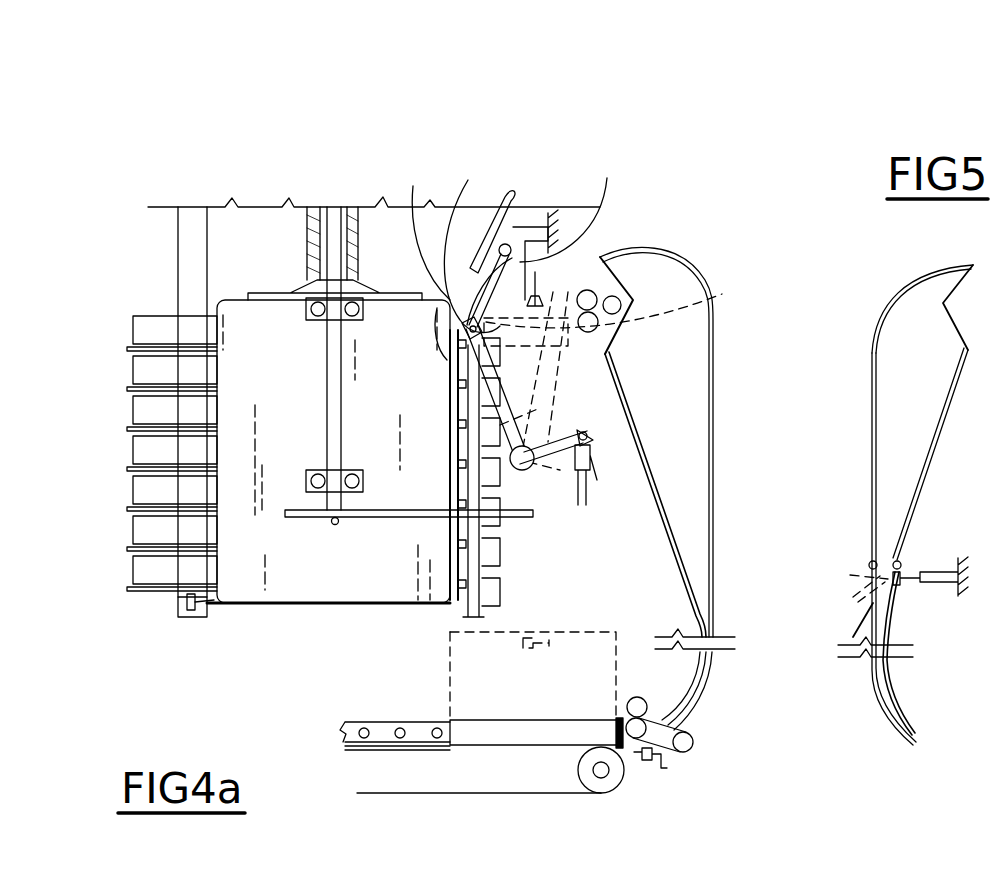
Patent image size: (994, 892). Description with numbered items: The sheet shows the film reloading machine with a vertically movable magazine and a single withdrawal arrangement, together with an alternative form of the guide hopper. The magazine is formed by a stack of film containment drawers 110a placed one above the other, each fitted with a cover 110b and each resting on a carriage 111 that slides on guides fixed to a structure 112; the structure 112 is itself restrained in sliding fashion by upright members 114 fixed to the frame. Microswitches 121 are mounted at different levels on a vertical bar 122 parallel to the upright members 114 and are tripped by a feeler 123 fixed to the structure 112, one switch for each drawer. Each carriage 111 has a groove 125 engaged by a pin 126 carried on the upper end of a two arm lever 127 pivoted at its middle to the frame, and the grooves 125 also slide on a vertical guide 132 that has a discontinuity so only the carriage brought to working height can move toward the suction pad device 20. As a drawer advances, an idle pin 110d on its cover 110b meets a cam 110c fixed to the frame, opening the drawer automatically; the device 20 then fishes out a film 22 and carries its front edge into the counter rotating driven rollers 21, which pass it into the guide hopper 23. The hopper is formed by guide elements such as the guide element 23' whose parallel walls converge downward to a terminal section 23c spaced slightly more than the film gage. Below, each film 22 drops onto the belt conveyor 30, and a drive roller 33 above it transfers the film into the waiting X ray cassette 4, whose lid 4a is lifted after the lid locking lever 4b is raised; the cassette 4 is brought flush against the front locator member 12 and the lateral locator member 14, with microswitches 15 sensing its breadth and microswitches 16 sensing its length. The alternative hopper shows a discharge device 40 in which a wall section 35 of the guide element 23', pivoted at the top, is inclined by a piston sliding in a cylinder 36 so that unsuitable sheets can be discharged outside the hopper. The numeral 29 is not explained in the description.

In FIG. 4A, the vertical bar 122 is at (203, 233).
In FIG. 4A, the groove 125 is at (423, 230).
In FIG. 4A, the cover 110b is at (475, 257).
In FIG. 4A, the idle pin 110d is at (507, 243).
In FIG. 4A, the cam 110c is at (559, 237).
In FIG. 4A, the suction pad device 20 is at (607, 290).
In FIG. 4A, the roller 29 is at (614, 302).
In FIG. 4A, the film 22 is at (619, 301).
In FIG. 4A, the counter rotating driven rollers 21 is at (608, 343).
In FIG. 4A, the film containment drawer 110a is at (210, 341).
In FIG. 4A, the structure 112 is at (279, 376).
In FIG. 4A, the upright members 114 is at (330, 417).
In FIG. 4A, the pin 126 is at (462, 345).
In FIG. 4A, the two arm lever 127 is at (510, 430).
In FIG. 4A, the vertical guide 132 is at (482, 610).
In FIG. 4A, the carriage 111 is at (147, 585).
In FIG. 4A, the microswitches 121 is at (191, 612).
In FIG. 4A, the feeler 123 is at (236, 606).
In FIG. 4A, the lid 4a is at (448, 632).
In FIG. 4A, the lid locking lever 4b is at (545, 650).
In FIG. 4A, the microswitches 16 is at (400, 728).
In FIG. 4A, the lateral locator member 14 is at (417, 728).
In FIG. 4A, the X ray cassette 4 is at (532, 744).
In FIG. 4A, the drive roller 33 is at (636, 697).
In FIG. 4A, the terminal section 23c is at (703, 698).
In FIG. 4A, the front locator member 12 is at (615, 727).
In FIG. 4A, the microswitches 15 is at (641, 762).
In FIG. 4A, the belt conveyor 30 is at (672, 750).
In FIG. 5, the guide element 23' is at (922, 393).
In FIG. 5, the guide hopper 23 is at (860, 549).
In FIG. 5, the discharge device 40 is at (912, 560).
In FIG. 5, the inclinable wall section 35 is at (848, 574).
In FIG. 5, the cylinder 36 is at (951, 585).